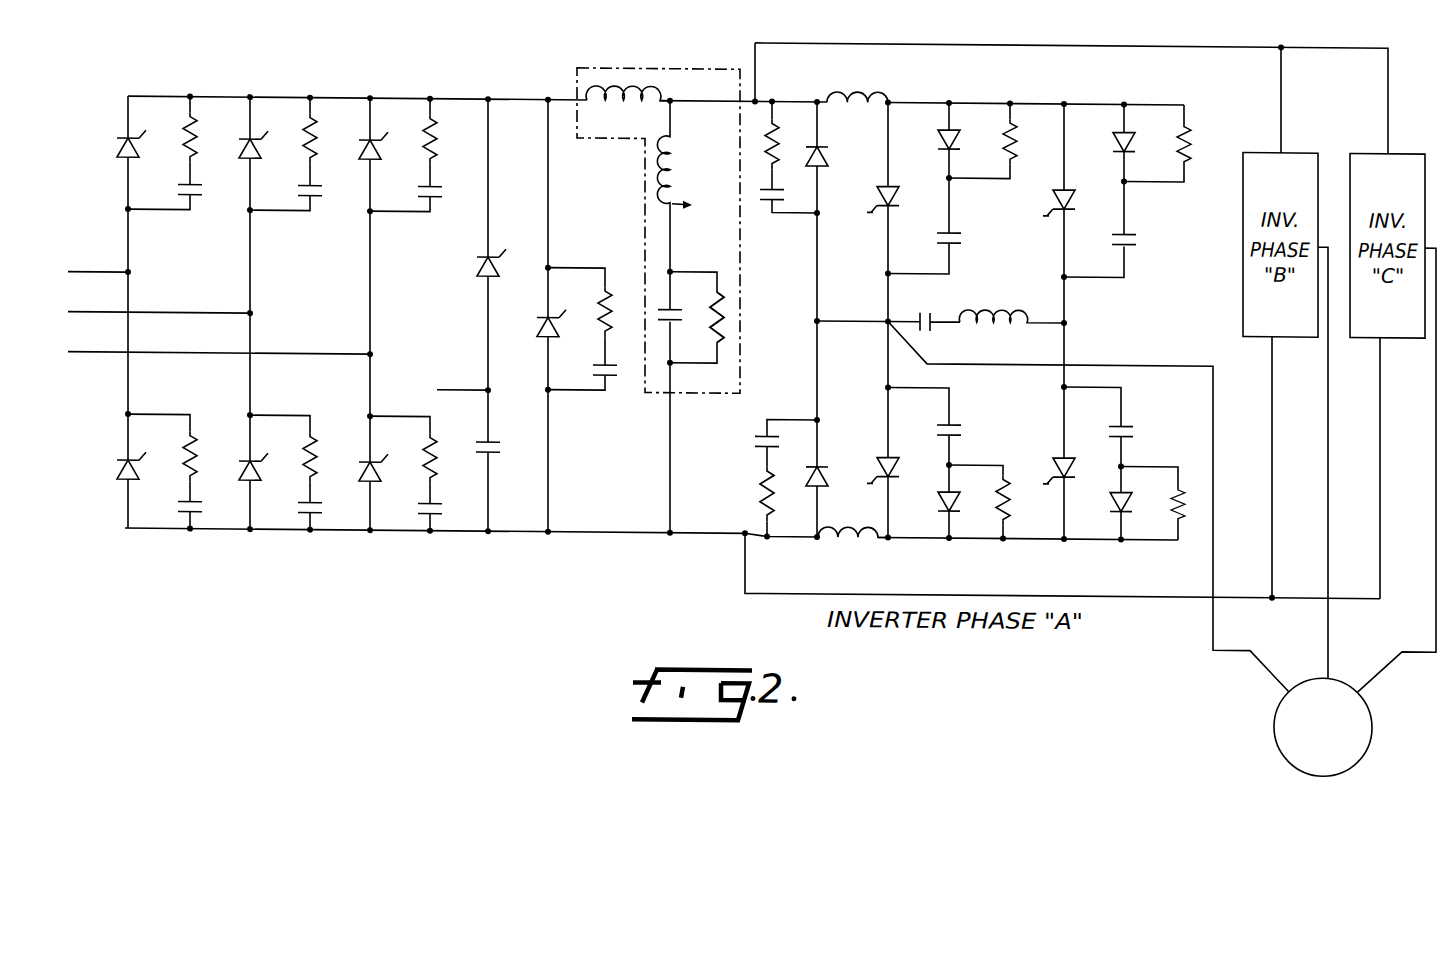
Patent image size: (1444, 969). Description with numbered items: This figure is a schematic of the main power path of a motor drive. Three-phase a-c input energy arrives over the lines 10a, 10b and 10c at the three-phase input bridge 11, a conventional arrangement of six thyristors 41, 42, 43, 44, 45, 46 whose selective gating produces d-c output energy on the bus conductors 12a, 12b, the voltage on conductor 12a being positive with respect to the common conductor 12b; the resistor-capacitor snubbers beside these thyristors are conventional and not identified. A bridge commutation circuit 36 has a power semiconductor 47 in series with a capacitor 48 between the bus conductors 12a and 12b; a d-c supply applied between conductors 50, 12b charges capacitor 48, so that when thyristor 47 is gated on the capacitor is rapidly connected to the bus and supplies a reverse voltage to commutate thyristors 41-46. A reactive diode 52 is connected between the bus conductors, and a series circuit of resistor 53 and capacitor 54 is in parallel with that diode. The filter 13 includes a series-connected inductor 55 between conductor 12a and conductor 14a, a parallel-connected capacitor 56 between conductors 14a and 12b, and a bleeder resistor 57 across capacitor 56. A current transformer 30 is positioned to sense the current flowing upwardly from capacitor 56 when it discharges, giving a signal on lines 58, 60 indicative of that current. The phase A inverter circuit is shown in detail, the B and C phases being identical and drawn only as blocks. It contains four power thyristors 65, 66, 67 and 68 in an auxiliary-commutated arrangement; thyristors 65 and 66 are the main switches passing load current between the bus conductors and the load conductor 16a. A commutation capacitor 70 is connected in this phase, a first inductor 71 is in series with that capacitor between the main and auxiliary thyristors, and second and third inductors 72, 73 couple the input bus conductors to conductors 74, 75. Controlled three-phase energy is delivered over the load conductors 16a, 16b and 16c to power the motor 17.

The input line 10a is at (104, 268).
The input line 10b is at (106, 316).
The input line 10c is at (106, 356).
The three-phase input bridge 11 is at (250, 365).
The bus conductor 12a is at (462, 96).
The bus conductor 12b is at (428, 530).
The filter circuit 13 is at (658, 341).
The conductor 14a is at (752, 92).
The load conductor 16a is at (1213, 646).
The load conductor 16b is at (1270, 524).
The load conductor 16c is at (1436, 488).
The motor 17 is at (1310, 762).
The current transformer 30 is at (676, 160).
The bridge commutation circuit 36 is at (513, 368).
The thyristor 41 is at (117, 148).
The thyristor 42 is at (116, 494).
The thyristor 43 is at (255, 161).
The thyristor 44 is at (252, 484).
The thyristor 45 is at (380, 163).
The thyristor 46 is at (374, 488).
The power semiconductor 47 is at (480, 263).
The capacitor 48 is at (491, 445).
The conductor 50 is at (463, 384).
The reactive diode 52 is at (542, 340).
The resistor 53 is at (604, 303).
The capacitor 54 is at (625, 374).
The inductor 55 is at (641, 108).
The capacitor 56 is at (696, 318).
The bleeder resistor 57 is at (718, 301).
The line 58 is at (673, 132).
The line 60 is at (692, 201).
The power thyristor 65 is at (880, 208).
The power thyristor 66 is at (895, 476).
The power thyristor 67 is at (1076, 194).
The power thyristor 68 is at (1082, 436).
The commutation capacitor 70 is at (925, 306).
The first inductor 71 is at (985, 312).
The second inductor 72 is at (856, 92).
The third inductor 73 is at (857, 531).
The conductor 74 is at (1036, 77).
The conductor 75 is at (1043, 531).